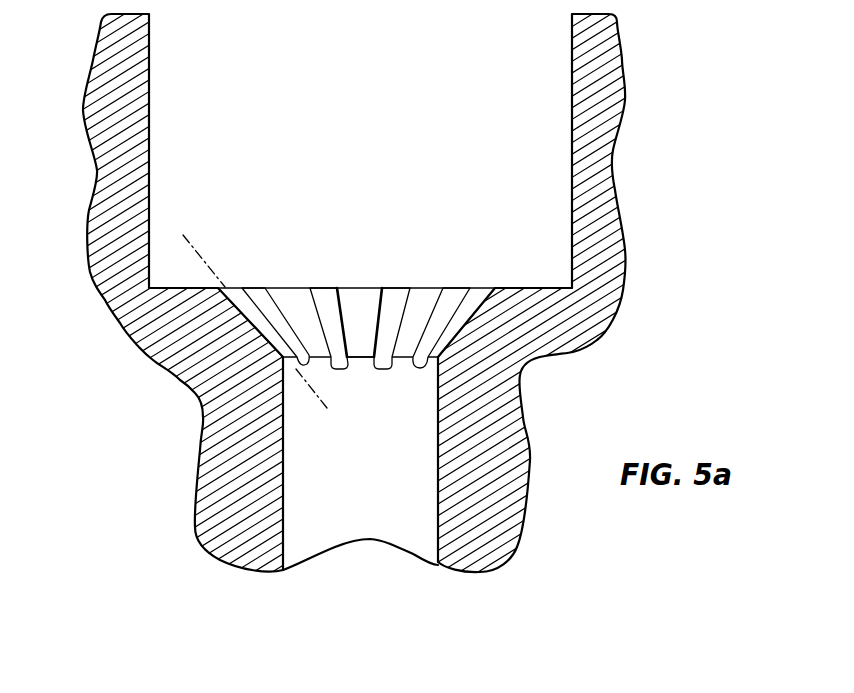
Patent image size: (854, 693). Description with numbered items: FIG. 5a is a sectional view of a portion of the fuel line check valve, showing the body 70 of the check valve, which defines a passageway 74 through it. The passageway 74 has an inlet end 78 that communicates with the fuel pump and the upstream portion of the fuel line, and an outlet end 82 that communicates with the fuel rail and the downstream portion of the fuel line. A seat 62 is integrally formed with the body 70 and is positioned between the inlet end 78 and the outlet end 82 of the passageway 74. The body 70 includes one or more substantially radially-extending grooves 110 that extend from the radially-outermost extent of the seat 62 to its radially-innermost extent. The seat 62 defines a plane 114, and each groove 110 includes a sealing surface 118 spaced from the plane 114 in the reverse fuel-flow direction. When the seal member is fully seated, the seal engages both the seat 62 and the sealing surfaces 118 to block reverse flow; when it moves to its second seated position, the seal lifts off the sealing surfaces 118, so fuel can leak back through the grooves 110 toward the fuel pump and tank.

The outlet end 82 is at (149, 60).
The passageway 74 is at (573, 160).
The body 70 is at (595, 208).
The grooves 110 is at (327, 317).
The seat 62 is at (358, 310).
The sealing surface 118 is at (250, 331).
The plane 114 is at (314, 396).
The inlet end 78 is at (438, 427).